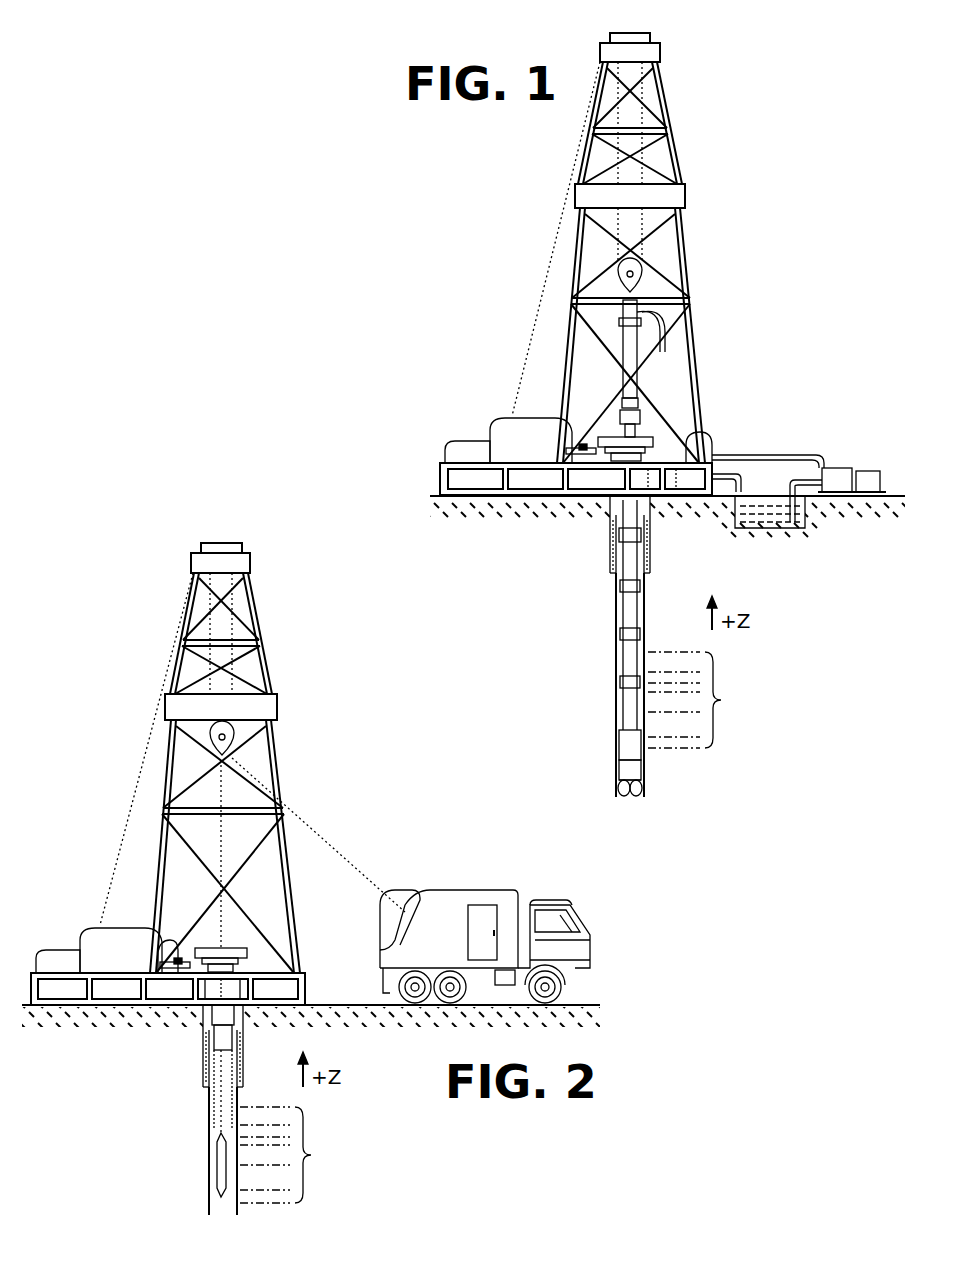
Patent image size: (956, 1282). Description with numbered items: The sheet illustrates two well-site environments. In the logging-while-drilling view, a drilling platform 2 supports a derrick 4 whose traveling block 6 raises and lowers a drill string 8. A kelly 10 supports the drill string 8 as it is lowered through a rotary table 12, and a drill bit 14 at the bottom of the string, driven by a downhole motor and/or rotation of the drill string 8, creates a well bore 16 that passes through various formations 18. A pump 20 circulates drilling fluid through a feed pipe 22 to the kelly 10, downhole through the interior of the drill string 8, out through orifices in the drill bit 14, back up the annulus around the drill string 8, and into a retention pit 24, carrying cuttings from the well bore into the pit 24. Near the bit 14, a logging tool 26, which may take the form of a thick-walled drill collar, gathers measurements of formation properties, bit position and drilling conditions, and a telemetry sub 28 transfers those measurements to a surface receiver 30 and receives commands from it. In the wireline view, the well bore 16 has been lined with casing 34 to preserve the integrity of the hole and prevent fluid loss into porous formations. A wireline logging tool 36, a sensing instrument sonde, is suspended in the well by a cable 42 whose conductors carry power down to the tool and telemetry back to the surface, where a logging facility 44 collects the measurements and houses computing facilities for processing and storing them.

In FIG. 1, the drilling platform 2 is at (440, 472).
In FIG. 2, the drilling platform 2 is at (308, 978).
In FIG. 1, the derrick 4 is at (672, 156).
In FIG. 2, the derrick 4 is at (292, 938).
In FIG. 1, the traveling block 6 is at (643, 277).
In FIG. 2, the traveling block 6 is at (234, 736).
In FIG. 1, the drill string 8 is at (637, 617).
In FIG. 1, the kelly 10 is at (630, 342).
In FIG. 1, the rotary table 12 is at (650, 438).
In FIG. 2, the rotary table 12 is at (240, 946).
In FIG. 1, the drill bit 14 is at (640, 790).
In FIG. 1, the well bore 16 is at (645, 622).
In FIG. 1, the formations 18 is at (702, 700).
In FIG. 2, the formations 18 is at (295, 1155).
In FIG. 1, the pump 20 is at (835, 470).
In FIG. 1, the feed pipe 22 is at (770, 456).
In FIG. 1, the retention pit 24 is at (750, 528).
In FIG. 1, the logging tool 26 is at (622, 765).
In FIG. 1, the telemetry sub 28 is at (622, 745).
In FIG. 1, the surface receiver 30 is at (637, 403).
In FIG. 2, the casing 34 is at (210, 1110).
In FIG. 2, the wireline logging tool 36 is at (218, 1157).
In FIG. 2, the cable 42 is at (292, 810).
In FIG. 2, the logging facility 44 is at (453, 888).